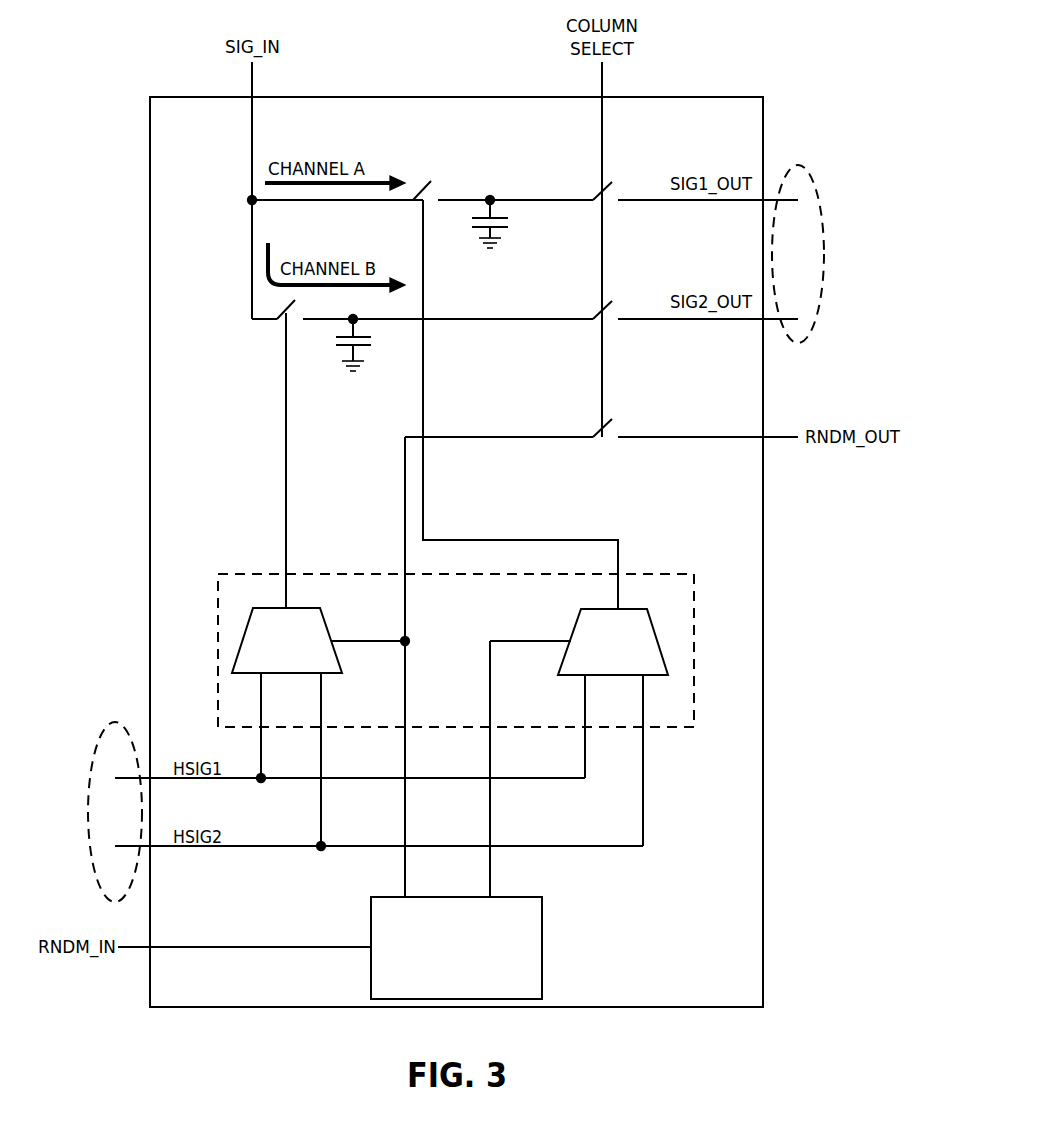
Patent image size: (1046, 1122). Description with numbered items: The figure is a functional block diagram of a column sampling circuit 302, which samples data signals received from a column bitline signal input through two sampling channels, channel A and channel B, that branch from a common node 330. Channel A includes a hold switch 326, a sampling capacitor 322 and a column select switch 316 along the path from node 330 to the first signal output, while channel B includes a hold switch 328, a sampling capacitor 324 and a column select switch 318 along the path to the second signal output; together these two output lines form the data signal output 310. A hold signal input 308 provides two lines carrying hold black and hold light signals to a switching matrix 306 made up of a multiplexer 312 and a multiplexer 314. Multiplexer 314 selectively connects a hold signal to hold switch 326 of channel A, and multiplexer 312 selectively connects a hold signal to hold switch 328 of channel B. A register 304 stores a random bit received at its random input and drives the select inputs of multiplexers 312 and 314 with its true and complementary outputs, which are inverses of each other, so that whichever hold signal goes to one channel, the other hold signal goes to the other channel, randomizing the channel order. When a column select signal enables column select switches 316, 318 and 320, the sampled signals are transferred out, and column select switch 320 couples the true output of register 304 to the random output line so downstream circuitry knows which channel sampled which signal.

The column sampling circuit 302 is at (456, 552).
The register 304 is at (456, 948).
The switching matrix 306 is at (675, 572).
The hold signal input 308 is at (105, 722).
The data signal output 310 is at (797, 165).
The multiplexer 312 is at (244, 632).
The multiplexer 314 is at (662, 652).
The column select switch 316 is at (610, 185).
The column select switch 318 is at (612, 304).
The column select switch 320 is at (612, 424).
The sampling capacitor 322 is at (509, 222).
The sampling capacitor 324 is at (341, 350).
The hold switch 326 is at (426, 185).
The hold switch 328 is at (278, 326).
The node 330 is at (250, 198).